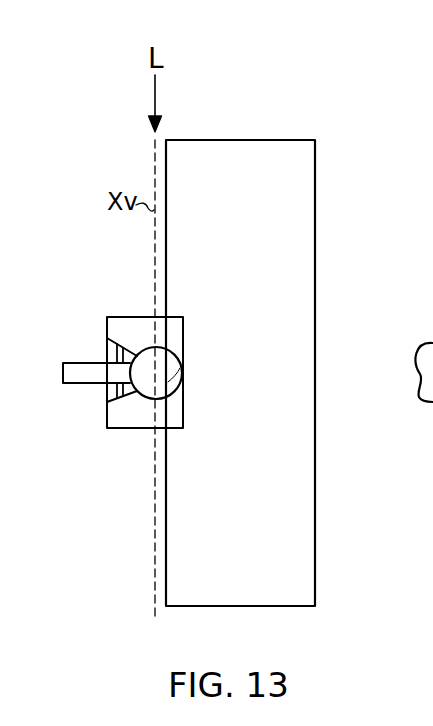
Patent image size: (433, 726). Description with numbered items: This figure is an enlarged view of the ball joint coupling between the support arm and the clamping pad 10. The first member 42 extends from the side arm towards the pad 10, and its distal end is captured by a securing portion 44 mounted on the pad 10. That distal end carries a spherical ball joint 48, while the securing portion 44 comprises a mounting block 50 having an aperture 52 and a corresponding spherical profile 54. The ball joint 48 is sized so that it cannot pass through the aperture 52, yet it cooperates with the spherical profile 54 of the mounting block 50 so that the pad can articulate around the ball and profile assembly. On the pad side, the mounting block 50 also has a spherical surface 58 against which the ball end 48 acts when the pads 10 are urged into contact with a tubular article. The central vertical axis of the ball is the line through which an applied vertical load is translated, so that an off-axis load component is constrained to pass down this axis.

The clamping pad 10 is at (268, 590).
The first member 42 is at (78, 372).
The securing portion 44 is at (148, 398).
The ball joint 48 is at (174, 388).
The mounting block 50 is at (123, 323).
The aperture 52 is at (128, 392).
The spherical profile 54 is at (170, 345).
The spherical surface 58 is at (182, 372).